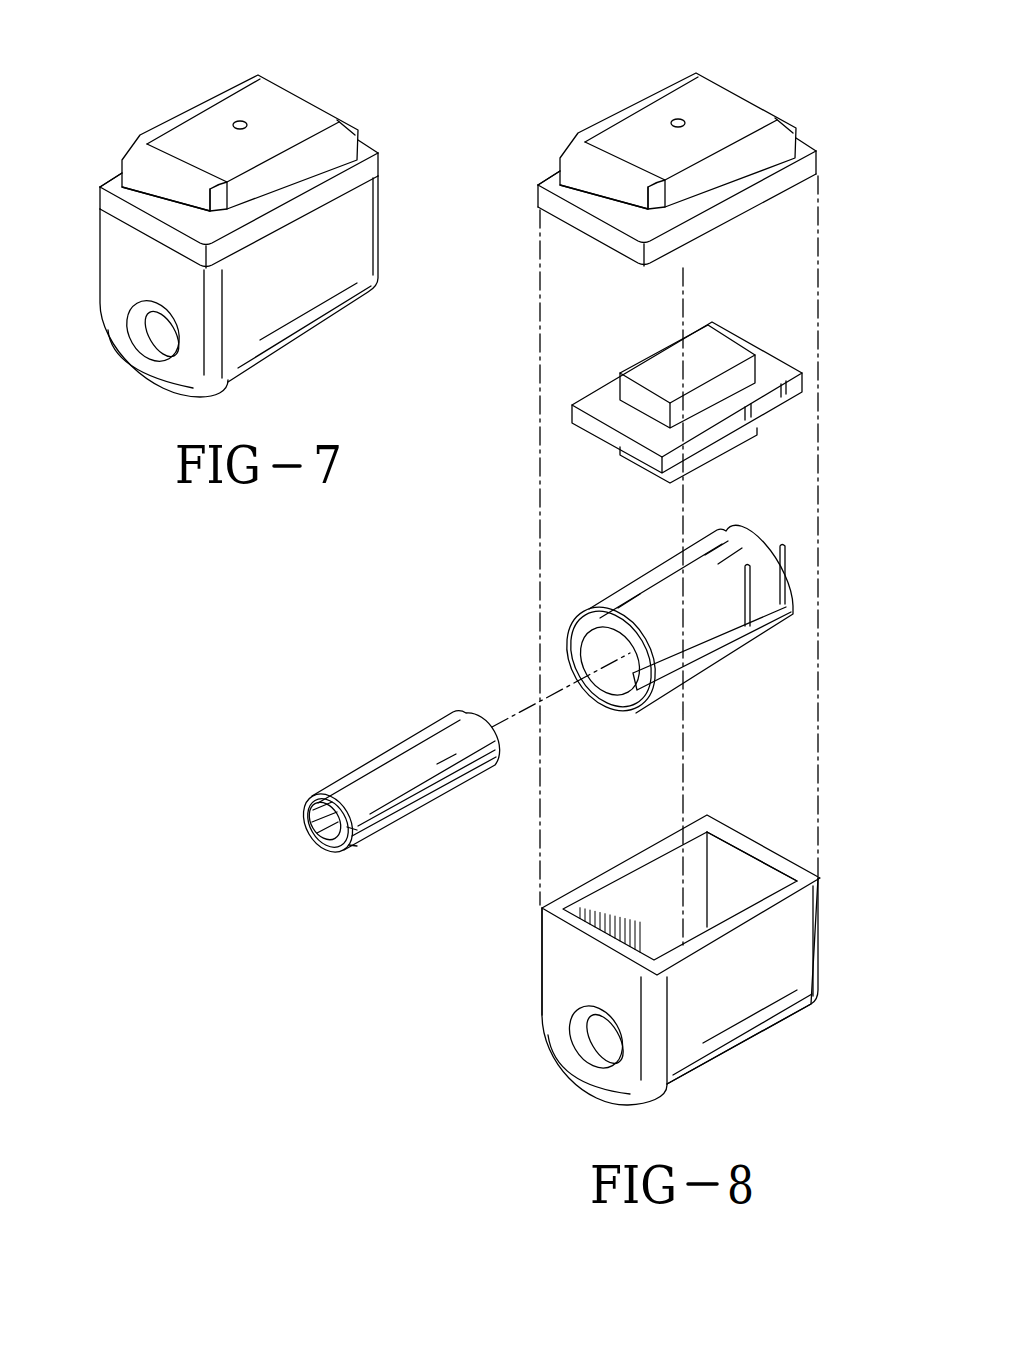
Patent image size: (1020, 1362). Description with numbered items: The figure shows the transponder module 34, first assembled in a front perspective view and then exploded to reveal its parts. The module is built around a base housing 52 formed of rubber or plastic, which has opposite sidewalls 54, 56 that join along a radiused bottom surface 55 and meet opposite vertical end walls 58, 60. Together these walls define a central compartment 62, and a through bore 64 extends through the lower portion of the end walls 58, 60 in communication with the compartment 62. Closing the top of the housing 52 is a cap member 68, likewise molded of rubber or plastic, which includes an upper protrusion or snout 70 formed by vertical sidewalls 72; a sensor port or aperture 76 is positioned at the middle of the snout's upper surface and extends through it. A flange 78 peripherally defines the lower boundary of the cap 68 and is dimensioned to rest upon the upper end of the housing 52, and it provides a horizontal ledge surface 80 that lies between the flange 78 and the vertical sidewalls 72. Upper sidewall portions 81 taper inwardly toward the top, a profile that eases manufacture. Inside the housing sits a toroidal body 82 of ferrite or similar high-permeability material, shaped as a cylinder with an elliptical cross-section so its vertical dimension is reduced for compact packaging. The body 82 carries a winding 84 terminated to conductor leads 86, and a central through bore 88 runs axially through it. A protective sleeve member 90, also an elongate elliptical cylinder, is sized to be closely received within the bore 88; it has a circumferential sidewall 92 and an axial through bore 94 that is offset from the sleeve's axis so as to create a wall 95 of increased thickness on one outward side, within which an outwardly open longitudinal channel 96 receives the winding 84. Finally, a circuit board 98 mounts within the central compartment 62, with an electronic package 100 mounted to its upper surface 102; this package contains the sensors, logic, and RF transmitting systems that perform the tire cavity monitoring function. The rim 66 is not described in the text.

In FIG. 7, the transponder module 34 is at (232, 237).
In FIG. 7, the base housing 52 is at (203, 293).
In FIG. 8, the base housing 52 is at (672, 937).
In FIG. 8, the sidewall 54 is at (767, 943).
In FIG. 8, the radiused bottom surface 55 is at (770, 1033).
In FIG. 8, the sidewall 56 is at (633, 900).
In FIG. 8, the vertical end wall 58 is at (740, 882).
In FIG. 8, the vertical end wall 60 is at (568, 967).
In FIG. 8, the central compartment 62 is at (660, 884).
In FIG. 7, the through bore 64 is at (155, 345).
In FIG. 8, the through bore 64 is at (588, 1048).
In FIG. 8, the rim 66 is at (738, 837).
In FIG. 8, the cap member 68 is at (681, 144).
In FIG. 7, the upper protrusion (snout) 70 is at (267, 118).
In FIG. 8, the upper protrusion (snout) 70 is at (707, 118).
In FIG. 7, the vertical sidewalls 72 is at (318, 173).
In FIG. 8, the vertical sidewalls 72 is at (757, 170).
In FIG. 7, the sensor port (aperture) 76 is at (237, 123).
In FIG. 8, the sensor port (aperture) 76 is at (675, 120).
In FIG. 7, the flange 78 is at (203, 203).
In FIG. 8, the flange 78 is at (643, 199).
In FIG. 7, the horizontal ledge surface 80 is at (108, 180).
In FIG. 8, the horizontal ledge surface 80 is at (548, 180).
In FIG. 7, the upper sidewall portions 81 is at (152, 164).
In FIG. 8, the upper sidewall portions 81 is at (592, 162).
In FIG. 8, the toroidal body 82 is at (629, 598).
In FIG. 8, the winding 84 is at (724, 650).
In FIG. 8, the conductor leads 86 is at (781, 546).
In FIG. 8, the central through bore 88 is at (595, 652).
In FIG. 8, the protective sleeve member 90 is at (357, 778).
In FIG. 8, the circumferential sidewall 92 is at (365, 777).
In FIG. 8, the through bore 94 is at (305, 829).
In FIG. 8, the wall 95 is at (338, 844).
In FIG. 8, the longitudinal channel 96 is at (398, 815).
In FIG. 8, the circuit board 98 is at (634, 375).
In FIG. 8, the electronic package 100 is at (720, 357).
In FIG. 8, the upper surface 102 is at (603, 402).